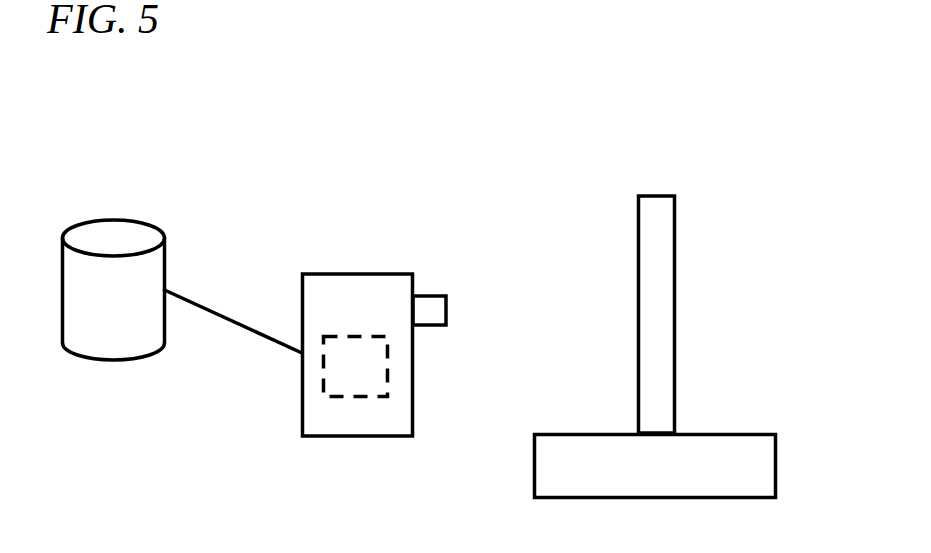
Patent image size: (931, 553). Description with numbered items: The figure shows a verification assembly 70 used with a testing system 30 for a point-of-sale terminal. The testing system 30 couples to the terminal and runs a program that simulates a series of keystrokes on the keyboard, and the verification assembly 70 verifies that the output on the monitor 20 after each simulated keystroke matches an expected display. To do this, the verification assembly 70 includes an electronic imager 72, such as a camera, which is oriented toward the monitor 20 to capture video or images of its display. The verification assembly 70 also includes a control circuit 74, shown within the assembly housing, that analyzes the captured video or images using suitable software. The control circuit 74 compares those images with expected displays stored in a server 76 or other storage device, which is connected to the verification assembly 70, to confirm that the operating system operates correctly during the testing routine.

The monitor 20 is at (658, 193).
The testing system 30 is at (728, 432).
The verification assembly 70 is at (358, 273).
The electronic imager 72 is at (445, 294).
The control circuit 74 is at (355, 400).
The server 76 is at (140, 362).